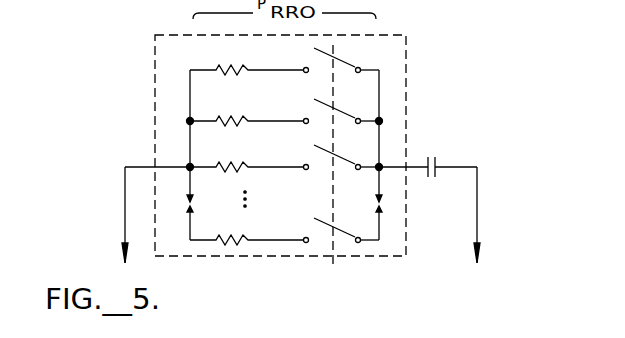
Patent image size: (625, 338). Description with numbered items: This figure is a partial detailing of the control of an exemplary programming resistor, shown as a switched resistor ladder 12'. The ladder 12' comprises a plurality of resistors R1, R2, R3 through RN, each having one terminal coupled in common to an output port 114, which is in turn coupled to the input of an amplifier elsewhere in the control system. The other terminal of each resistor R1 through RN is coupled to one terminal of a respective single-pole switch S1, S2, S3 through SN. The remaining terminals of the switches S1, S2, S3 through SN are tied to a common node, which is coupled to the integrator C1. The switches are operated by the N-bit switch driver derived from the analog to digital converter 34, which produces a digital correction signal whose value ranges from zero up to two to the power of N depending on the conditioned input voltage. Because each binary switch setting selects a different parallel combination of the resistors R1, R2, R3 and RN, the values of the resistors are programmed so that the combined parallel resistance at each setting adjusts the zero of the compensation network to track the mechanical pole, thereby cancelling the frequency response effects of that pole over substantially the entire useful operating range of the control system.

The switched resistor ladder 12' is at (254, 145).
The output port 114 is at (126, 167).
The resistor R1 is at (222, 64).
The resistor R2 is at (222, 115).
The resistor R3 is at (222, 161).
The resistor RN is at (226, 233).
The single-pole switch S1 is at (312, 63).
The single-pole switch S2 is at (312, 114).
The single-pole switch S3 is at (312, 160).
The single-pole switch SN is at (313, 232).
The integrator C1 is at (436, 167).
The analog to digital converter 34 is at (368, 177).